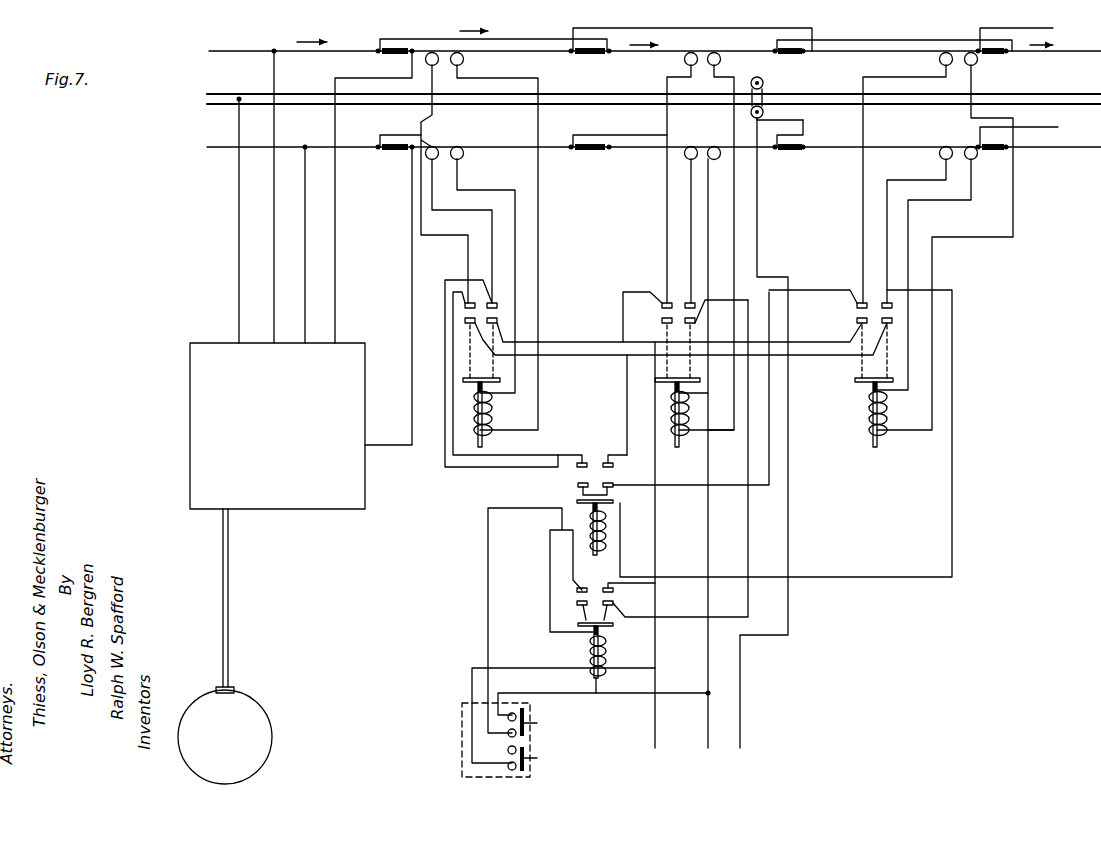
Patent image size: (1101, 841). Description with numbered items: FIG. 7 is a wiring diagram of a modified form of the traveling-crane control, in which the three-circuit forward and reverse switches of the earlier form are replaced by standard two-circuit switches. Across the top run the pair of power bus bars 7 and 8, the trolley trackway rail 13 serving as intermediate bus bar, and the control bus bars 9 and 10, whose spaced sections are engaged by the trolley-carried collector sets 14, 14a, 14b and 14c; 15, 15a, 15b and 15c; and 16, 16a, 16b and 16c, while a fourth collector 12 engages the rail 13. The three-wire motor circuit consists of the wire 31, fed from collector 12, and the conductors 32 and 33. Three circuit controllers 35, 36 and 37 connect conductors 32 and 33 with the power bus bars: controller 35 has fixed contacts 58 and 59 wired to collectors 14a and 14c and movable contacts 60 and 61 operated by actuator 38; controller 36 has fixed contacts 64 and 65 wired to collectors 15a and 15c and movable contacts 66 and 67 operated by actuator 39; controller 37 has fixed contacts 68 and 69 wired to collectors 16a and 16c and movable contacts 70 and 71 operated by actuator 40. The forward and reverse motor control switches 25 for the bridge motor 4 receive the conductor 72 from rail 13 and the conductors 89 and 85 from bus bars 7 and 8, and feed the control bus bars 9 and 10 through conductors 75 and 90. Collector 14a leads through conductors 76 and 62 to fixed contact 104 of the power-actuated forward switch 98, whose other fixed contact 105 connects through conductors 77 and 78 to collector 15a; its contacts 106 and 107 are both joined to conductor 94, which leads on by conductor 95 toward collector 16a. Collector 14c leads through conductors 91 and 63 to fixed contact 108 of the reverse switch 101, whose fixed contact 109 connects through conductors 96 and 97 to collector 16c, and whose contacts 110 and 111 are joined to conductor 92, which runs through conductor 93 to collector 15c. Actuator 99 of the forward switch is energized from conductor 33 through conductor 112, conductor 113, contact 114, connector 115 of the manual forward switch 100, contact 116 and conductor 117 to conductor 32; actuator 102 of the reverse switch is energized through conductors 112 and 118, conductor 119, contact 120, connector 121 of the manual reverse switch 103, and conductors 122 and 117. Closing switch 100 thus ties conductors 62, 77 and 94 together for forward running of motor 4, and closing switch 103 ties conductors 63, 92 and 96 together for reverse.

The bridge motor 4 is at (272, 737).
The power bus bar 7 is at (252, 50).
The power bus bar 8 is at (292, 150).
The control bus bar 9 is at (536, 52).
The control bus bar 10 is at (486, 149).
The collector 12 is at (764, 81).
The trolley trackway rail 13 is at (293, 93).
The collector 14 is at (460, 146).
The collector 14a is at (430, 52).
The collector 14b is at (457, 52).
The collector 14c is at (434, 146).
The collector 15 is at (721, 155).
The collector 15a is at (690, 52).
The collector 15b is at (716, 52).
The collector 15c is at (685, 157).
The collector 16 is at (968, 146).
The collector 16a is at (945, 52).
The collector 16b is at (970, 52).
The collector 16c is at (943, 146).
The circuit controlling mechanism 25 is at (348, 510).
The wire 31 is at (742, 722).
The conductor 32 is at (718, 725).
The conductor 33 is at (657, 730).
The circuit controller 35 is at (500, 380).
The circuit controller 36 is at (655, 381).
The circuit controller 37 is at (855, 381).
The actuator 38 is at (492, 413).
The actuator 39 is at (690, 455).
The actuator 40 is at (868, 412).
The fixed contact 58 is at (465, 305).
The fixed contact 59 is at (497, 305).
The movable contact 60 is at (465, 321).
The movable contact 61 is at (497, 320).
The conductor 62 is at (553, 454).
The conductor 63 is at (490, 468).
The fixed contact 64 is at (660, 302).
The fixed contact 65 is at (685, 302).
The movable contact 66 is at (662, 321).
The movable contact 67 is at (697, 320).
The fixed contact 68 is at (857, 305).
The fixed contact 69 is at (892, 305).
The movable contact 70 is at (857, 321).
The movable contact 71 is at (892, 321).
The conductor 72 is at (218, 221).
The conductor 75 is at (337, 238).
The conductor 76 is at (441, 237).
The conductor 77 is at (626, 414).
The conductor 78 is at (667, 205).
The conductor 85 is at (307, 262).
The conductor 89 is at (272, 266).
The conductor 90 is at (388, 447).
The conductor 91 is at (471, 215).
The conductor 92 is at (650, 620).
The conductor 93 is at (690, 232).
The conductor 94 is at (630, 490).
The conductor 95 is at (863, 200).
The conductor 96 is at (676, 576).
The conductor 97 is at (922, 178).
The forward switch 98 is at (615, 501).
The actuator 99 is at (607, 522).
The manually controlled switch 100 is at (530, 733).
The reverse switch 101 is at (612, 628).
The actuator 102 is at (606, 667).
The manually operated reverse switch 103 is at (524, 768).
The fixed contact 104 is at (577, 472).
The fixed contact 105 is at (606, 460).
The contact 106 is at (578, 487).
The contact 107 is at (620, 488).
The fixed contact 108 is at (577, 601).
The fixed contact 109 is at (615, 590).
The contact 110 is at (577, 606).
The contact 111 is at (613, 604).
The conductor 112 is at (609, 568).
The conductor 113 is at (486, 560).
The contact 114 is at (522, 746).
The connector 115 is at (526, 712).
The contact 116 is at (514, 712).
The conductor 117 is at (596, 698).
The conductor 118 is at (580, 585).
The conductor 119 is at (472, 678).
The contact 120 is at (516, 769).
The connector 121 is at (524, 757).
The conductor 122 is at (512, 750).